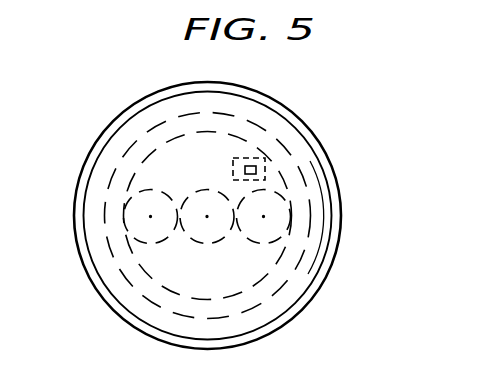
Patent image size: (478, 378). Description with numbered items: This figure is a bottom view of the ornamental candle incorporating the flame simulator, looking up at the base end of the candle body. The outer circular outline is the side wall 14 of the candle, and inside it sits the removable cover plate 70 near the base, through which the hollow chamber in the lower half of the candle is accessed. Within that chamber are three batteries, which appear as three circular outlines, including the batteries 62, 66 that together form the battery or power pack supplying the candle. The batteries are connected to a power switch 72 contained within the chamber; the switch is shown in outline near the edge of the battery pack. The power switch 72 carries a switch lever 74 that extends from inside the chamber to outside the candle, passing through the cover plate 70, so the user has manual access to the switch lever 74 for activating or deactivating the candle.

The side wall 14 is at (343, 216).
The battery 62 is at (130, 204).
The battery 66 is at (323, 235).
The cover plate 70 is at (317, 262).
The power switch 72 is at (283, 128).
The switch lever 74 is at (256, 170).